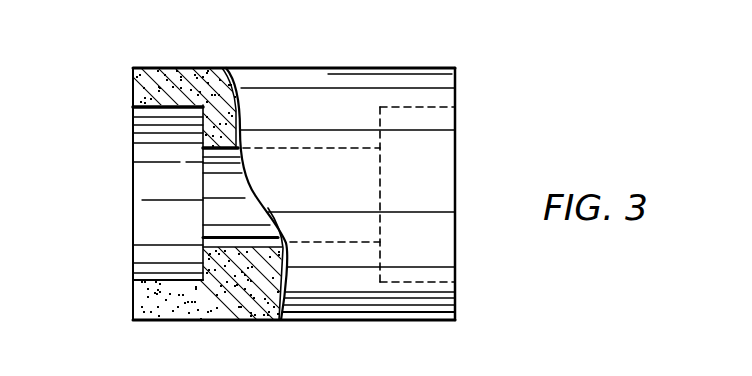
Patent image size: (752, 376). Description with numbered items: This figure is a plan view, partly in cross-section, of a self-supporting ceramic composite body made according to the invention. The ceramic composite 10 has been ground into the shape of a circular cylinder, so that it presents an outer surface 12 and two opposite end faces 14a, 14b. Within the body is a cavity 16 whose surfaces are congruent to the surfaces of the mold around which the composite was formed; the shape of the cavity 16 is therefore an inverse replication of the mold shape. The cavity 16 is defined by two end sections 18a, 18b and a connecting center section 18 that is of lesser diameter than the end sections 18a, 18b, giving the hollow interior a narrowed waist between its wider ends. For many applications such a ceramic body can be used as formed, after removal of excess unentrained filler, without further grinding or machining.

The ceramic composite 10 is at (388, 66).
The outer surface 12 is at (281, 97).
The end face 14a is at (131, 132).
The end face 14b is at (455, 293).
The cavity 16 is at (238, 212).
The center section 18 is at (258, 218).
The end section 18a is at (153, 225).
The end section 18b is at (430, 180).